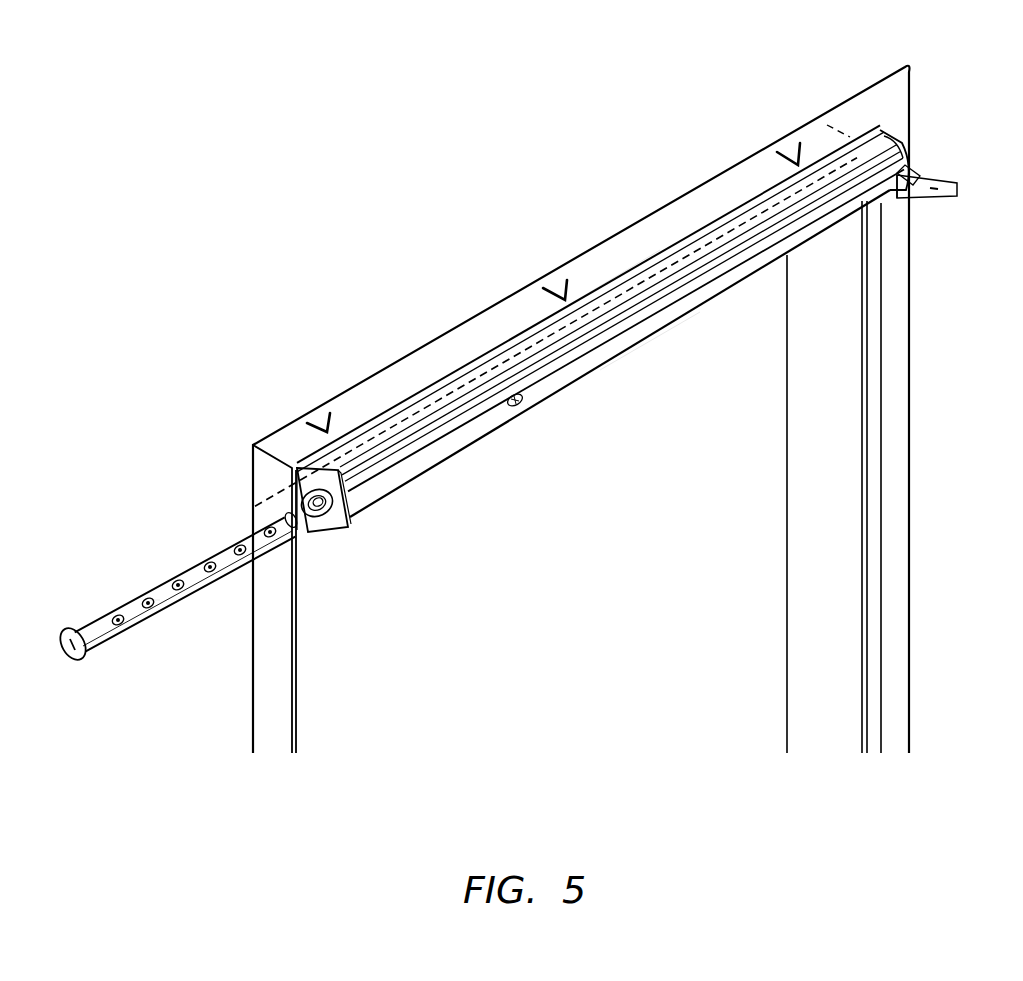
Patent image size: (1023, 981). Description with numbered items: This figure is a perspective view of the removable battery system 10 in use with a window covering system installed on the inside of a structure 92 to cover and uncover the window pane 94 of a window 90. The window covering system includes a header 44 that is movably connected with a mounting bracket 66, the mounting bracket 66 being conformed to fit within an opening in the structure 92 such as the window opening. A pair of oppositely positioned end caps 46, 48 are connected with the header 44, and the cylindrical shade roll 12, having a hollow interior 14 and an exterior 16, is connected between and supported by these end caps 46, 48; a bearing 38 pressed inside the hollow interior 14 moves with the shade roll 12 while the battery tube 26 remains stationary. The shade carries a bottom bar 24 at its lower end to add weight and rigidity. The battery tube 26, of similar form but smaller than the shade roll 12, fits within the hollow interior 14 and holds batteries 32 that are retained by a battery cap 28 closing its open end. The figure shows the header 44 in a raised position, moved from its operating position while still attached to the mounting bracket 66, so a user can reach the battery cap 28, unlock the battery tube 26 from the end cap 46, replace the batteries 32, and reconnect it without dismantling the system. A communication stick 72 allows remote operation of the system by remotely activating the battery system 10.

The removable battery system 10 is at (153, 510).
The shade roll 12 is at (628, 337).
The hollow interior 14 is at (671, 316).
The exterior 16 is at (308, 485).
The bottom bar 24 is at (900, 153).
The battery tube 26 is at (193, 595).
The battery cap 28 is at (77, 667).
The batteries 32 is at (150, 587).
The bearing 38 is at (528, 400).
The header 44 is at (847, 170).
The end cap 46 is at (350, 530).
The end cap 48 is at (913, 178).
The mounting bracket 66 is at (602, 272).
The communication stick 72 is at (953, 190).
The window 90 is at (722, 527).
The structure 92 is at (966, 570).
The window pane 94 is at (598, 617).